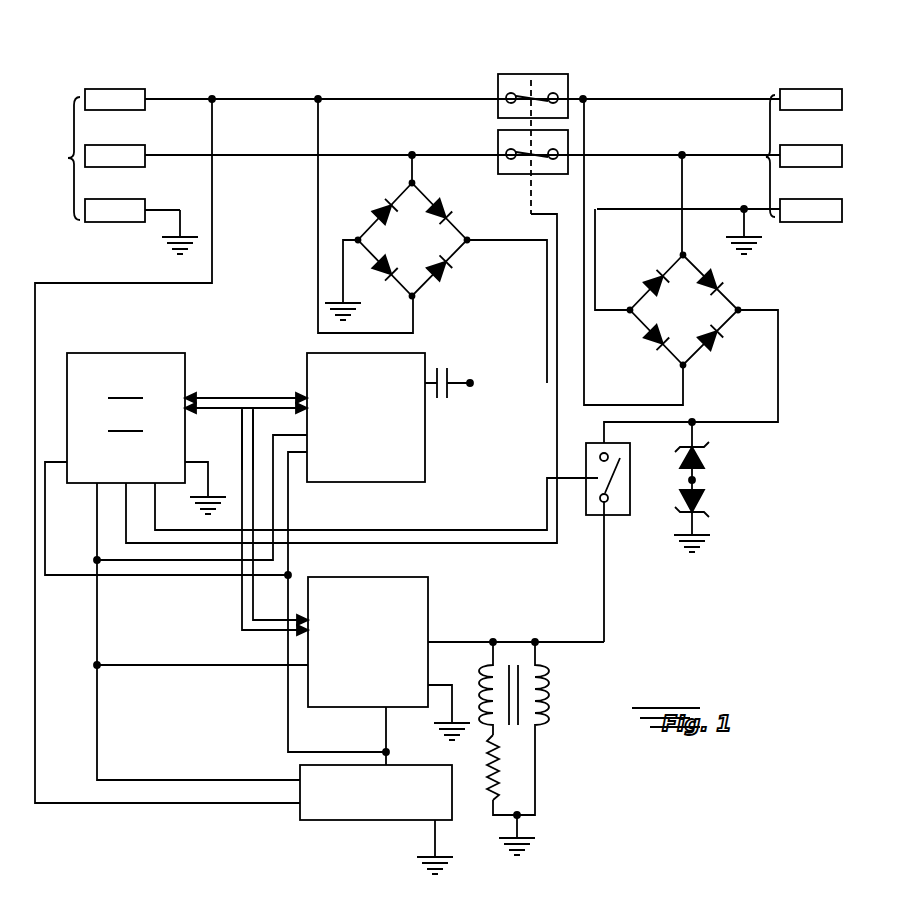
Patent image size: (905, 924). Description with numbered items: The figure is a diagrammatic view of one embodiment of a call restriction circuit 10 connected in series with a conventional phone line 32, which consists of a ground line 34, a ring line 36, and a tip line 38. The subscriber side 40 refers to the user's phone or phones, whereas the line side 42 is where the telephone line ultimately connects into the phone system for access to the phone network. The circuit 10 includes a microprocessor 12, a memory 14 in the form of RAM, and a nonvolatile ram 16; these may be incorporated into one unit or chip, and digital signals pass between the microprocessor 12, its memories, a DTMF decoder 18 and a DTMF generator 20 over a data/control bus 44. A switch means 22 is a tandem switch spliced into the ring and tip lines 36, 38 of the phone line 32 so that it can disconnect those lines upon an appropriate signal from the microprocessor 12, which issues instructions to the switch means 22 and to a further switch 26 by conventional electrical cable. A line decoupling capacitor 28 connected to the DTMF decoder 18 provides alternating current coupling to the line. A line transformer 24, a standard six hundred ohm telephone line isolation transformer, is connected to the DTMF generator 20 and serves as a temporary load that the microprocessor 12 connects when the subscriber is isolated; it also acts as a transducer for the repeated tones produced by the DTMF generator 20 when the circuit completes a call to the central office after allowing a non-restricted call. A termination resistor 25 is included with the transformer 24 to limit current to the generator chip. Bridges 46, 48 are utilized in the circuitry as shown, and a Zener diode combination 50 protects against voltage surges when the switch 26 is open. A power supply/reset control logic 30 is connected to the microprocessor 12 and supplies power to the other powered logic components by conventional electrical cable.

The call restriction circuit 10 is at (417, 42).
The microprocessor 12 is at (140, 373).
The memory 14 is at (114, 418).
The nonvolatile ram 16 is at (93, 458).
The DTMF decoder 18 is at (408, 433).
The DTMF generator 20 is at (428, 592).
The switch means 22 is at (578, 75).
The line transformer 24 is at (543, 665).
The termination resistor 25 is at (497, 760).
The switch 26 is at (583, 462).
The line decoupling capacitor 28 is at (455, 400).
The power supply/reset control logic 30 is at (367, 822).
The phone line 32 is at (70, 157).
The ground line 34 is at (162, 208).
The ring line 36 is at (162, 153).
The tip line 38 is at (162, 97).
The subscriber side 40 is at (122, 58).
The line side 42 is at (783, 66).
The data/control bus 44 is at (248, 473).
The bridge 46 is at (735, 290).
The bridge 48 is at (435, 193).
The Zener diode combination 50 is at (715, 458).